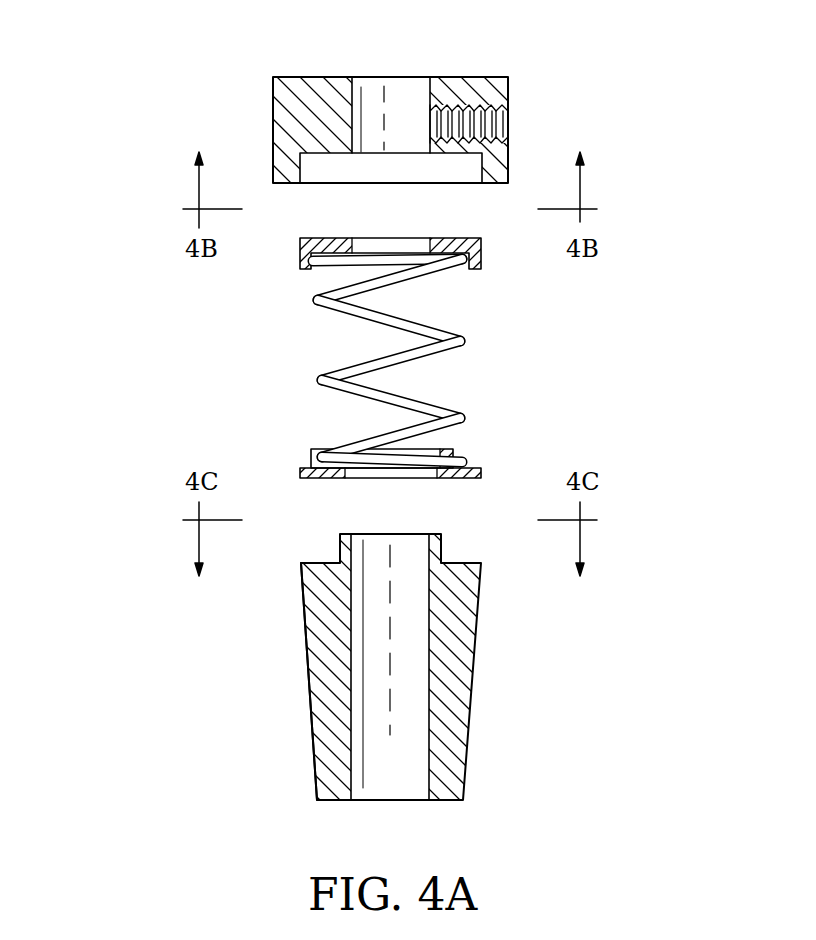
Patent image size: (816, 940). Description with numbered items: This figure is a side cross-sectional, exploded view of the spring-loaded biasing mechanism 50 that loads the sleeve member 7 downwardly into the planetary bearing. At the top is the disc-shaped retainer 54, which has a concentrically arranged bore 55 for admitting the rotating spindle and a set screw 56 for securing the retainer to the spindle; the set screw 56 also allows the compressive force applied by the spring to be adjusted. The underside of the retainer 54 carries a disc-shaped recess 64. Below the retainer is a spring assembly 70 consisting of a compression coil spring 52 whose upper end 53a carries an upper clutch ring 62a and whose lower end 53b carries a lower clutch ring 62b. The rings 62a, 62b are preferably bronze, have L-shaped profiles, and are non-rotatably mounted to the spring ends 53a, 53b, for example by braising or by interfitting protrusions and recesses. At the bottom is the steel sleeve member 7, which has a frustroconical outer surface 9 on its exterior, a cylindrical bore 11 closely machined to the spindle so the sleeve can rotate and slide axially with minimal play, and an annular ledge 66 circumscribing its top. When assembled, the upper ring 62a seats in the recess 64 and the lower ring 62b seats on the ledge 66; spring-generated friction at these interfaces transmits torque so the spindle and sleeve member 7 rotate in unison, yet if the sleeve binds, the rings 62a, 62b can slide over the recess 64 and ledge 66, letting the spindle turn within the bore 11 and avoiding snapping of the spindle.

The spring-loaded biasing mechanism 50 is at (150, 114).
The disc-shaped retainer 54 is at (530, 82).
The bore 55 is at (430, 92).
The set screw 56 is at (508, 125).
The disc-shaped recess 64 is at (335, 168).
The spring assembly 70 is at (637, 181).
The upper clutch ring 62a is at (300, 257).
The lower clutch ring 62b is at (300, 471).
The compression coil spring 52 is at (465, 342).
The upper end of coil spring 53a is at (395, 255).
The lower end of coil spring 53b is at (415, 463).
The sleeve member 7 is at (256, 664).
The annular ledge 66 is at (328, 563).
The frustroconical outer surface 9 is at (312, 725).
The cylindrical bore 11 is at (429, 780).